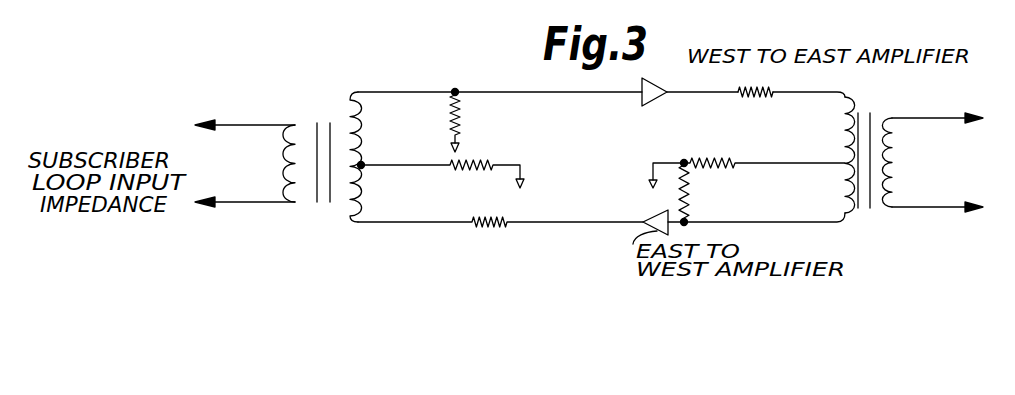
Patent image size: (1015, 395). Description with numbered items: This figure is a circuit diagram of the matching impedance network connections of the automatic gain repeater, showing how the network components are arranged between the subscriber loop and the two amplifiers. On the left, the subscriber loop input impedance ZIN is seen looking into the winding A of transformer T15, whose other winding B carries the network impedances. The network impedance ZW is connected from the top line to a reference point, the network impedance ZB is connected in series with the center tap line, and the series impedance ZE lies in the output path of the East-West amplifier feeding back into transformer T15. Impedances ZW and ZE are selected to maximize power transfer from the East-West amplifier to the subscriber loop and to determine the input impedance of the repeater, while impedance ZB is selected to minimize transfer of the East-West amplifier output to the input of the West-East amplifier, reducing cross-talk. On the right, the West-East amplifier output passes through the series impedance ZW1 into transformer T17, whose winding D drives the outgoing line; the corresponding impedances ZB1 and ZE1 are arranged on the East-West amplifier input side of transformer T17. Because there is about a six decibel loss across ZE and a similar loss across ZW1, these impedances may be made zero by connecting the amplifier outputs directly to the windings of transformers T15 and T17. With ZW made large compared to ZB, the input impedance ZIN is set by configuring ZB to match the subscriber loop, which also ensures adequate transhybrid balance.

The transformer T15 is at (334, 149).
The transformer T17 is at (887, 152).
The input impedance ZIN is at (245, 163).
The primary winding port A is at (267, 163).
The secondary winding port B is at (371, 182).
The output winding port D is at (932, 162).
The network impedance ZW is at (474, 123).
The network impedance ZB is at (442, 167).
The series impedance ZE is at (500, 236).
The series impedance ZW1 is at (761, 105).
The output balance impedance ZB1 is at (747, 163).
The east-to-west input impedance ZE1 is at (708, 195).